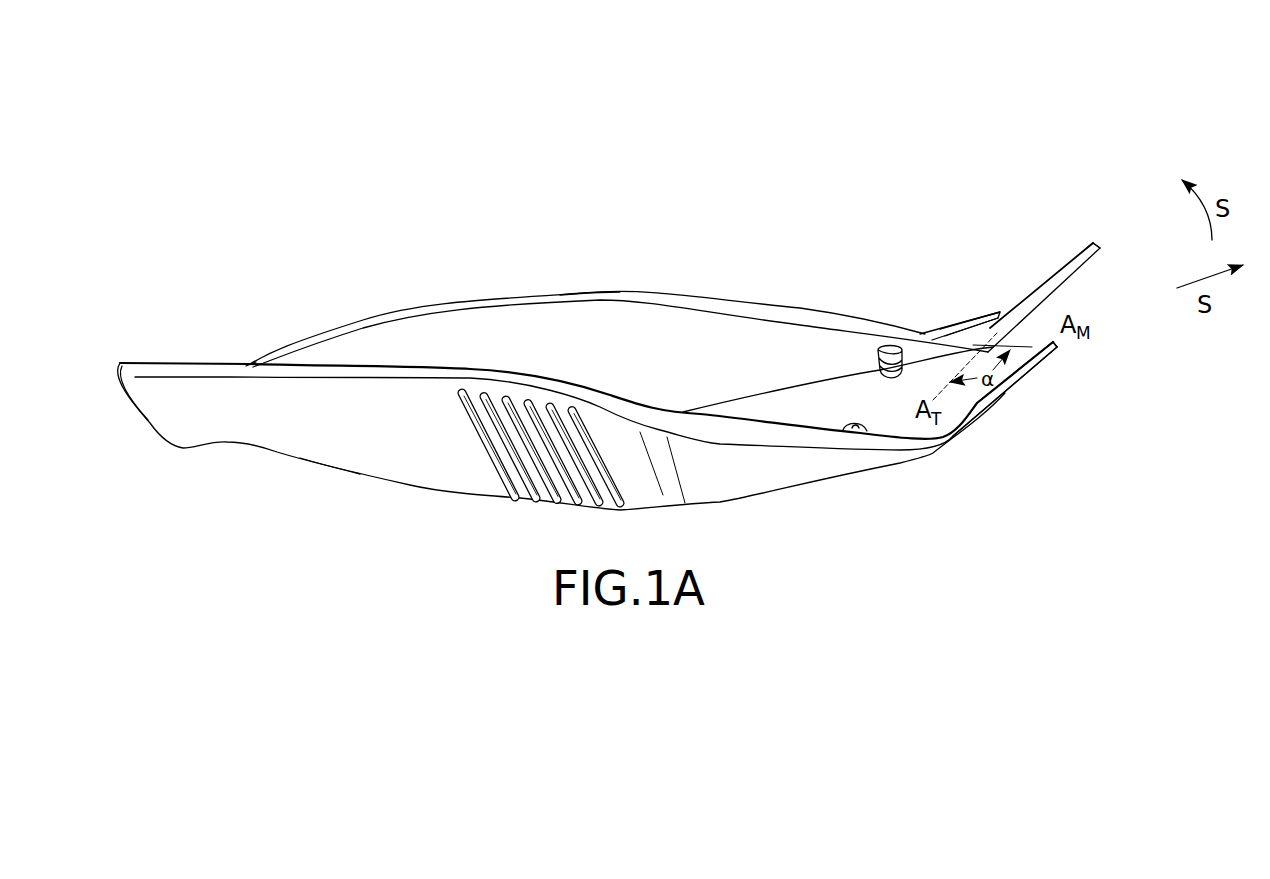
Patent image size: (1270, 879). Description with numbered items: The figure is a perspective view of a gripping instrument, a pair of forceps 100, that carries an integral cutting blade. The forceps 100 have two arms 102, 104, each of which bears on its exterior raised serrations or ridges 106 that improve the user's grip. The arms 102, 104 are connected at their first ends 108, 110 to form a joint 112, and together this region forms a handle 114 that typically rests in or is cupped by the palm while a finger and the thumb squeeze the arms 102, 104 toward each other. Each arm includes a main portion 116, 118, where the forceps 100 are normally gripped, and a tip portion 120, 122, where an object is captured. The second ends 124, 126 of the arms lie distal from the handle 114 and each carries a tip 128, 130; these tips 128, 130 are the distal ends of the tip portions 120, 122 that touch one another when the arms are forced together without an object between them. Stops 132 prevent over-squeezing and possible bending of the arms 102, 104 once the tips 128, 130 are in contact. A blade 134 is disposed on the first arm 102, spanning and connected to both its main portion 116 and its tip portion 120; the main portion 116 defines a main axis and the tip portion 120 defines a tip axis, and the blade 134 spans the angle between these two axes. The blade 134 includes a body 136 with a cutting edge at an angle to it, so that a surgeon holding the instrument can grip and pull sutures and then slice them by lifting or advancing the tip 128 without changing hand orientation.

The forceps 100 is at (990, 122).
The first arm 102 is at (750, 333).
The second arm 104 is at (733, 483).
The ridges 106 is at (497, 467).
The first end of first arm 108 is at (156, 326).
The first end of second arm 110 is at (245, 498).
The joint 112 is at (250, 363).
The handle 114 is at (152, 405).
The main portion of first arm 116 is at (617, 322).
The main portion of second arm 118 is at (327, 452).
The tip portion of first arm 120 is at (1057, 277).
The tip portion of second arm 122 is at (983, 415).
The second end of first arm 124 is at (1084, 225).
The second end of second arm 126 is at (1014, 433).
The tip of first arm 128 is at (1093, 243).
The tip of second arm 130 is at (1055, 343).
The stops 132 is at (883, 347).
The blade 134 is at (960, 333).
The body 136 is at (963, 320).